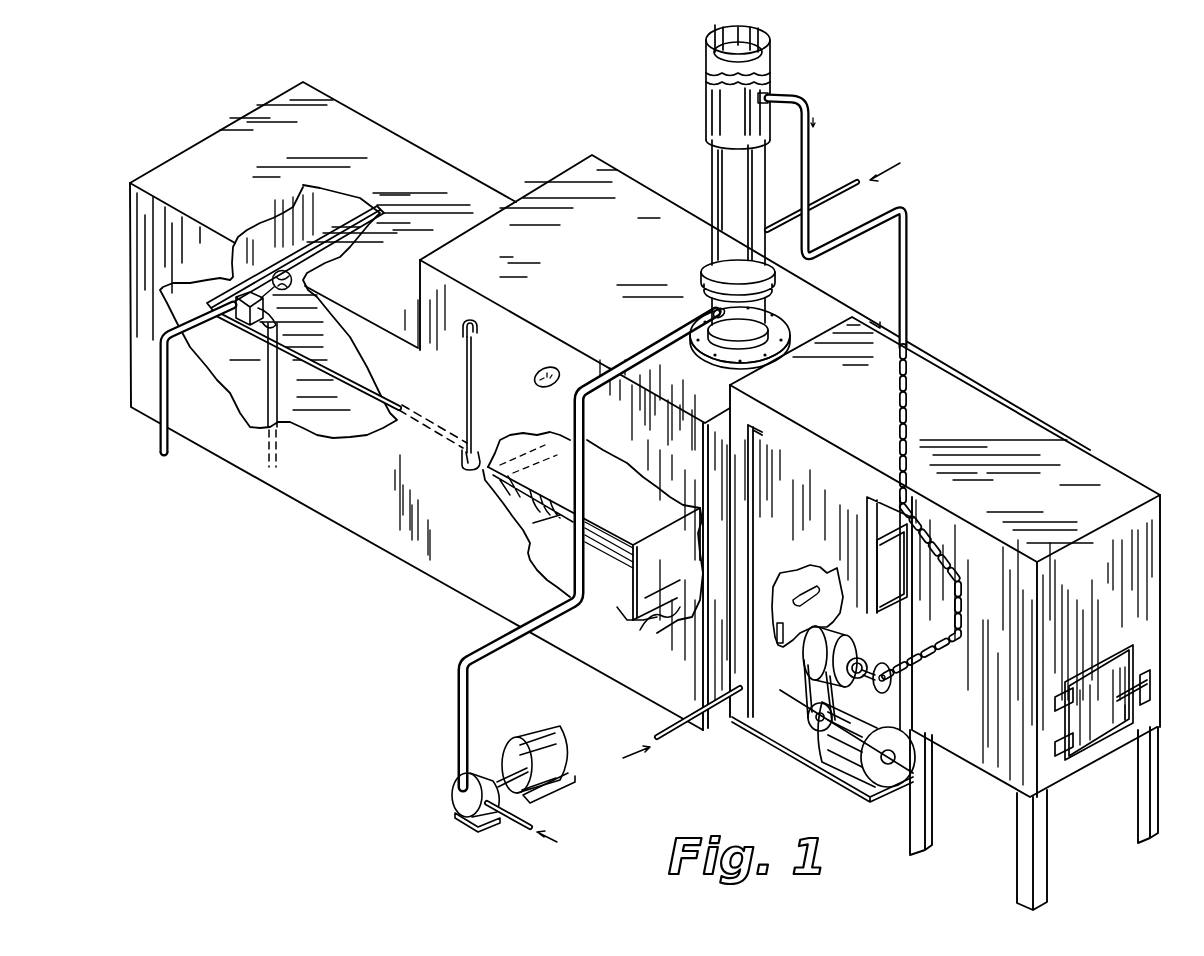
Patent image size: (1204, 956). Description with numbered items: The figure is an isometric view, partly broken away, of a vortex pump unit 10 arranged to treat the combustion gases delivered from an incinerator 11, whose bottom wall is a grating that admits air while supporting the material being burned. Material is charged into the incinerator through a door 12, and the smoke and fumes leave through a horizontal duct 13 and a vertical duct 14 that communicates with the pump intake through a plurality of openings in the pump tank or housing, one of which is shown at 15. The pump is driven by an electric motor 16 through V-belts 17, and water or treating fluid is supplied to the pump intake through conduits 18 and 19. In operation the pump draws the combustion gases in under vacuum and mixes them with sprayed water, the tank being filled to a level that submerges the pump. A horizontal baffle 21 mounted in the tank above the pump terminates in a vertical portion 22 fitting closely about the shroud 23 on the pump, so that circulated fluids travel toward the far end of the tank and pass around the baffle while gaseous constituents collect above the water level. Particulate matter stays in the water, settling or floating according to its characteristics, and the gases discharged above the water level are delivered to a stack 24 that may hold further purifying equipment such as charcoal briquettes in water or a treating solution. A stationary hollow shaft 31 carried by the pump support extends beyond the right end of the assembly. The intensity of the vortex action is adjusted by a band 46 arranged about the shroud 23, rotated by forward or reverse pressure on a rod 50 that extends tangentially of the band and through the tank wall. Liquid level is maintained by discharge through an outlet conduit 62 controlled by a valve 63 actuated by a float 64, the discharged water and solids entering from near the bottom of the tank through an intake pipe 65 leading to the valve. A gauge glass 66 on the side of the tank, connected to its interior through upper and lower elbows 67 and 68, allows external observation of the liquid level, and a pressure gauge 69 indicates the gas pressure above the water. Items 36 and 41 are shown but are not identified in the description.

The vortex pump unit 10 is at (414, 568).
The incinerator 11 is at (1120, 452).
The door 12 is at (1123, 668).
The horizontal duct 13 is at (840, 463).
The vertical duct 14 is at (750, 667).
The opening 15 is at (807, 597).
The electric motor 16 is at (880, 773).
The V-belts 17 is at (783, 700).
The conduit 18 is at (677, 740).
The conduit 19 is at (907, 257).
The horizontal baffle 21 is at (373, 378).
The vertical portion 22 is at (645, 600).
The shroud 23 is at (680, 607).
The stack 24 is at (720, 167).
The stationary hollow shaft 31 is at (877, 667).
The inlet line 36 is at (857, 182).
The pipe 41 is at (640, 350).
The band 46 is at (523, 553).
The rod 50 is at (508, 517).
The outlet conduit 62 is at (168, 447).
The valve 63 is at (245, 290).
The float 64 is at (300, 281).
The intake pipe 65 is at (273, 398).
The gauge glass 66 is at (472, 365).
The upper elbow 67 is at (476, 327).
The lower elbow 68 is at (465, 465).
The pressure gauge 69 is at (553, 392).